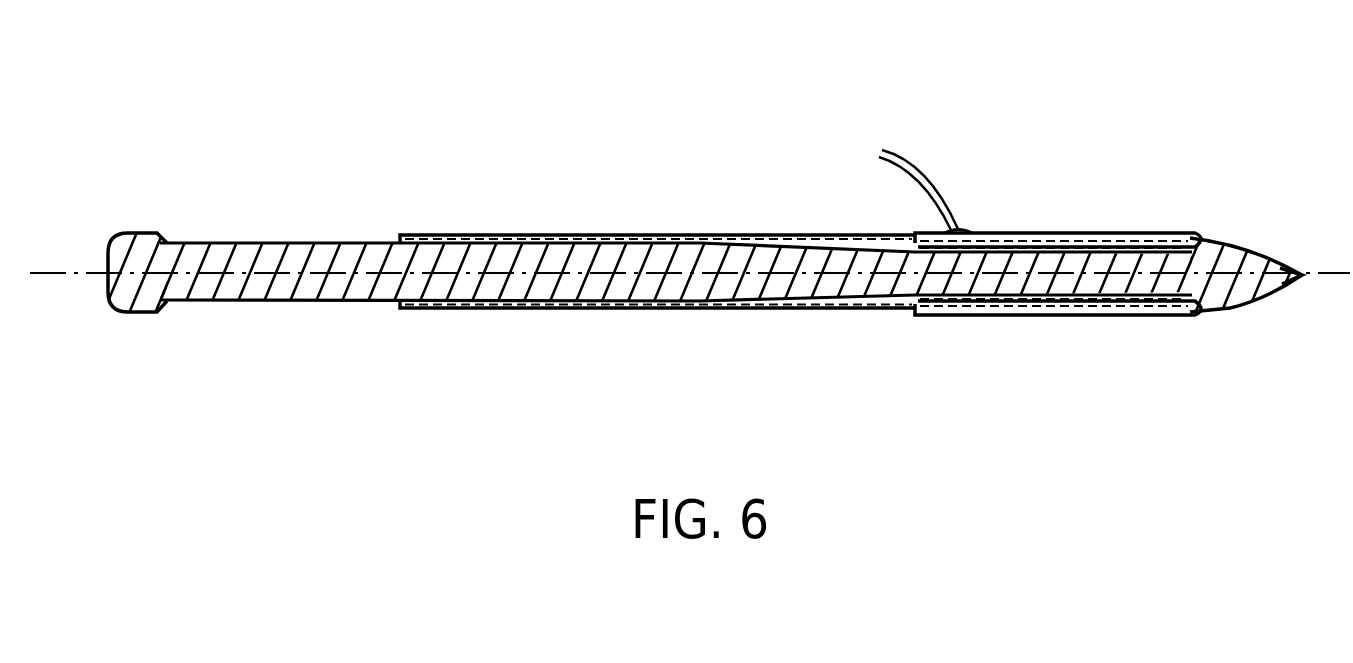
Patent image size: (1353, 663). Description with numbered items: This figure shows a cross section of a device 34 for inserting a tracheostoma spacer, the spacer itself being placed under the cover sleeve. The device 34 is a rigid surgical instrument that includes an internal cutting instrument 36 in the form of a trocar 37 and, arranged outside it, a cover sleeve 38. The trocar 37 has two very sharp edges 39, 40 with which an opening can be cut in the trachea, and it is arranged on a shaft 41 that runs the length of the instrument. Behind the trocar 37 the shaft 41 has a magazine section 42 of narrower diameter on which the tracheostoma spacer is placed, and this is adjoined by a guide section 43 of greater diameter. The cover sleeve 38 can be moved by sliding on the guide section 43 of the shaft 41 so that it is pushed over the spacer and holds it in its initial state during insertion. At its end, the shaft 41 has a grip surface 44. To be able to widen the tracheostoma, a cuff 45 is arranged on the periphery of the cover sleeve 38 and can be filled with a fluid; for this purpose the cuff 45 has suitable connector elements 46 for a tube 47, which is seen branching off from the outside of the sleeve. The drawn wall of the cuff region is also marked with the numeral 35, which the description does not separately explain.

The device for inserting a tracheostoma spacer 34 is at (738, 120).
The outer sleeve upper wall 35 is at (1075, 248).
The internal cutting instrument 36 is at (1280, 242).
The trocar 37 is at (1262, 284).
The cover sleeve 38 is at (578, 216).
The sharp edge 39 is at (1232, 240).
The sharp edge 40 is at (1230, 306).
The shaft 41 is at (850, 285).
The magazine section 42 is at (1118, 287).
The guide section 43 is at (679, 287).
The grip surface 44 is at (248, 222).
The cuff 45 is at (1030, 320).
The connector elements 46 is at (964, 229).
The tube 47 is at (903, 163).